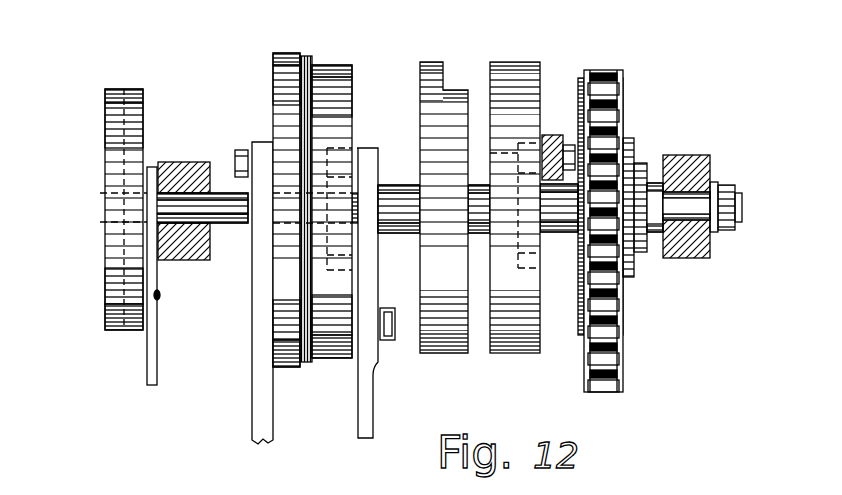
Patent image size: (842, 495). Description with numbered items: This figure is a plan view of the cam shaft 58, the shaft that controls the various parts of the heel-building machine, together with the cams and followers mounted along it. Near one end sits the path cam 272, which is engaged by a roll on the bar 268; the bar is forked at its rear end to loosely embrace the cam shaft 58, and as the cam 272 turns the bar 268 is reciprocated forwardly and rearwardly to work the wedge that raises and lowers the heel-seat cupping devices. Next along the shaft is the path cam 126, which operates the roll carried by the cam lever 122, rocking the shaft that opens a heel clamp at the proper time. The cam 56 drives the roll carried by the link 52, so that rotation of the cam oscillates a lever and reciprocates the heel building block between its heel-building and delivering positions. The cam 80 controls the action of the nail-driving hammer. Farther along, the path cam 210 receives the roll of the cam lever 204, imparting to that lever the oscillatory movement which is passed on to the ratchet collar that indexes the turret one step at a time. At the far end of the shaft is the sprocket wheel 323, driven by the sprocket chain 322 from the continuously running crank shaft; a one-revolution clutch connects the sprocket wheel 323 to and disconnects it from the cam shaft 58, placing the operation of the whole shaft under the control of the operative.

The path cam 272 is at (112, 154).
The cam shaft 58 is at (233, 198).
The path cam 126 is at (284, 91).
The bar 268 is at (153, 349).
The cam lever 122 is at (255, 347).
The cam 56 is at (343, 155).
The link 52 is at (375, 268).
The cam 80 is at (450, 90).
The path cam 210 is at (539, 68).
The cam lever 204 is at (553, 135).
The sprocket wheel 323 is at (622, 77).
The sprocket chain 322 is at (624, 373).